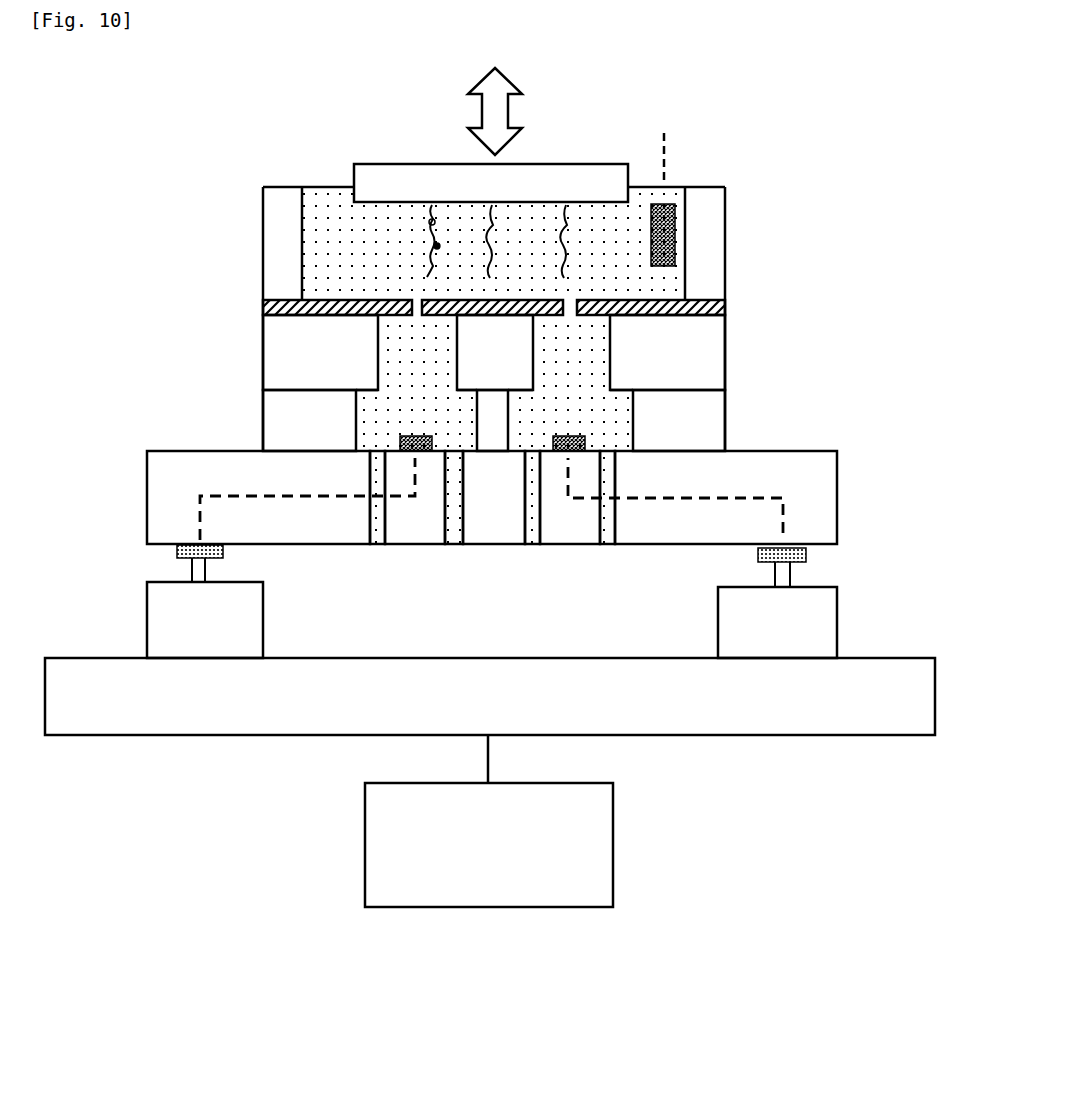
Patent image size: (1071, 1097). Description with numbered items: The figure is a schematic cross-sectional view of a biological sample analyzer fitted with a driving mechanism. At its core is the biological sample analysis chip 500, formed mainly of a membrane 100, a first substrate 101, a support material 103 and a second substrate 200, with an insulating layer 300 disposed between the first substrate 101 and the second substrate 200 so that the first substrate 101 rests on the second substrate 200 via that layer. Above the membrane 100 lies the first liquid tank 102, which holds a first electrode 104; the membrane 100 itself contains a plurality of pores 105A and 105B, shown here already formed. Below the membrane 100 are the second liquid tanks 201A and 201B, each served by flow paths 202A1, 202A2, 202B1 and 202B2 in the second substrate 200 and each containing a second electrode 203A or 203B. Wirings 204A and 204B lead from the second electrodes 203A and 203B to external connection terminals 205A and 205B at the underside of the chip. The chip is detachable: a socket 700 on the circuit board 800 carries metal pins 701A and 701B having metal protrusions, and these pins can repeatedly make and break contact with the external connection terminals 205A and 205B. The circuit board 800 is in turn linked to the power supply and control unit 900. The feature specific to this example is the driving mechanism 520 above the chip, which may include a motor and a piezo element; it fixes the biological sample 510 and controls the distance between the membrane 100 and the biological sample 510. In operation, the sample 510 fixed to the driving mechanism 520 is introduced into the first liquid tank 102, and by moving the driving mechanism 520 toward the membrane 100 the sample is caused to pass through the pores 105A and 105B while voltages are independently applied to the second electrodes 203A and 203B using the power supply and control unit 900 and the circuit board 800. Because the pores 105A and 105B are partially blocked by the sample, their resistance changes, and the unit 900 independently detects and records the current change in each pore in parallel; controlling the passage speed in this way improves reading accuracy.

The membrane 100 is at (282, 300).
The first substrate 101 is at (737, 318).
The first liquid tank 102 is at (330, 190).
The support material 103 is at (718, 210).
The first electrode 104 is at (670, 203).
The pore 105A is at (414, 298).
The pore 105B is at (577, 300).
The second substrate 200 is at (132, 451).
The second liquid tank 201A is at (418, 352).
The second liquid tank 201B is at (570, 356).
The flow path 202A1 is at (378, 547).
The flow path 202A2 is at (452, 547).
The flow path 202B1 is at (533, 547).
The flow path 202B2 is at (607, 547).
The second electrode 203A is at (413, 435).
The second electrode 203B is at (567, 435).
The wiring 204A is at (343, 498).
The wiring 204B is at (648, 500).
The external connection terminal 205A is at (222, 550).
The external connection terminal 205B is at (760, 552).
The insulating layer 300 is at (737, 395).
The biological sample analysis chip 500 is at (862, 175).
The biological sample 510 is at (430, 235).
The driving mechanism 520 is at (583, 170).
The socket 700 is at (152, 620).
The metal pin 701A is at (190, 573).
The metal pin 701B is at (787, 572).
The circuit board 800 is at (773, 722).
The power supply and control unit 900 is at (614, 845).